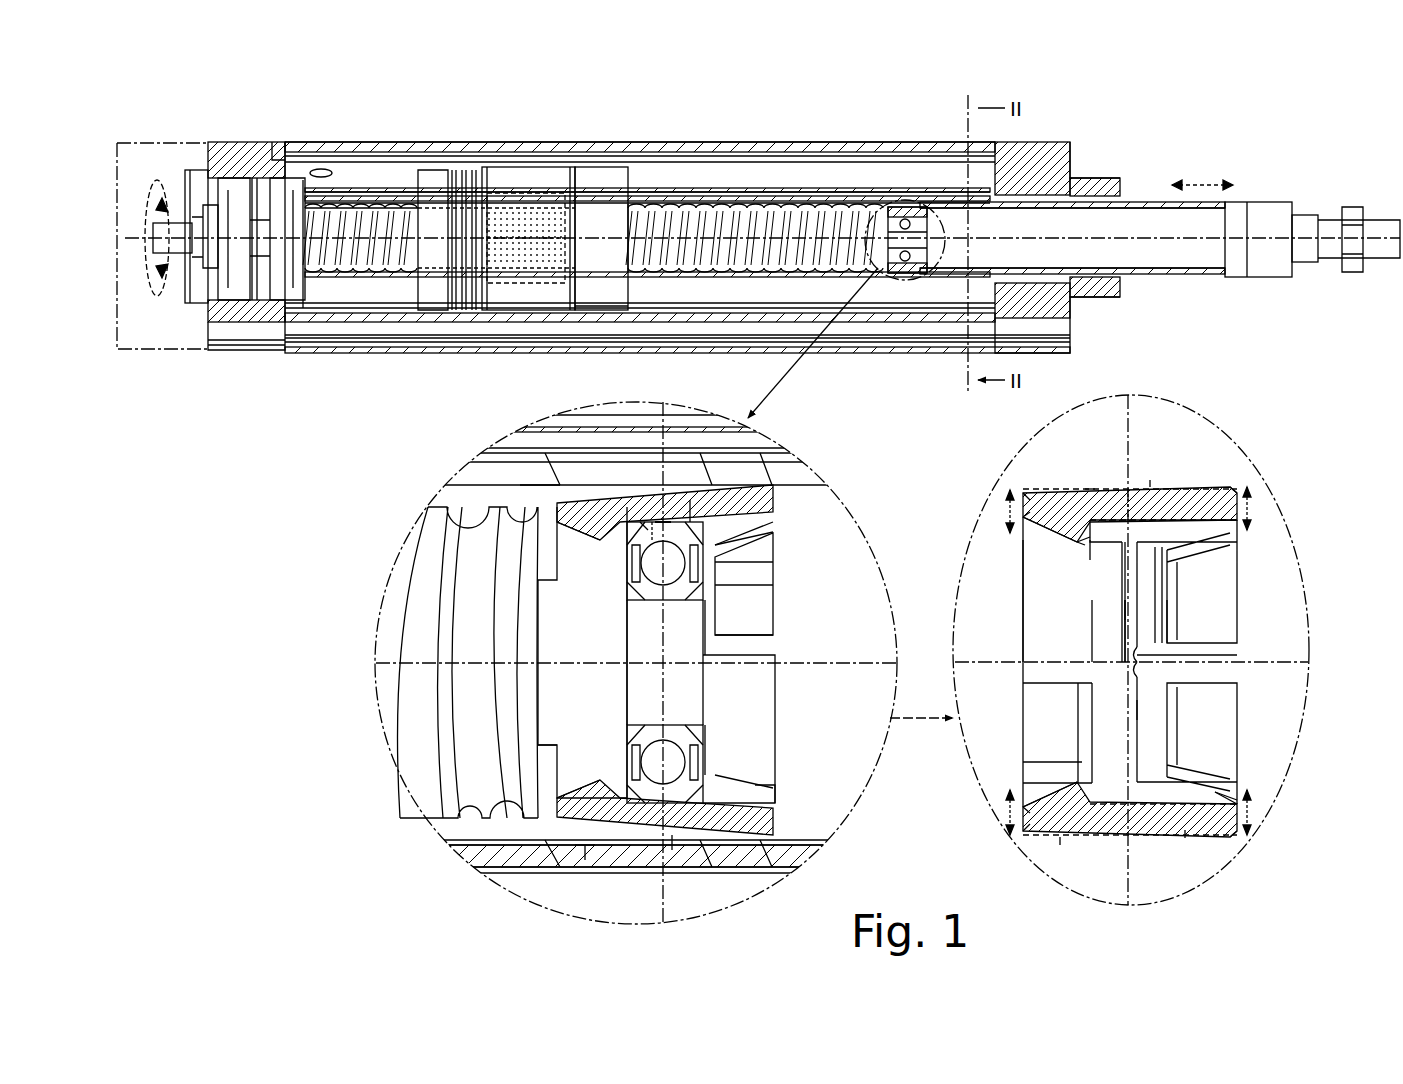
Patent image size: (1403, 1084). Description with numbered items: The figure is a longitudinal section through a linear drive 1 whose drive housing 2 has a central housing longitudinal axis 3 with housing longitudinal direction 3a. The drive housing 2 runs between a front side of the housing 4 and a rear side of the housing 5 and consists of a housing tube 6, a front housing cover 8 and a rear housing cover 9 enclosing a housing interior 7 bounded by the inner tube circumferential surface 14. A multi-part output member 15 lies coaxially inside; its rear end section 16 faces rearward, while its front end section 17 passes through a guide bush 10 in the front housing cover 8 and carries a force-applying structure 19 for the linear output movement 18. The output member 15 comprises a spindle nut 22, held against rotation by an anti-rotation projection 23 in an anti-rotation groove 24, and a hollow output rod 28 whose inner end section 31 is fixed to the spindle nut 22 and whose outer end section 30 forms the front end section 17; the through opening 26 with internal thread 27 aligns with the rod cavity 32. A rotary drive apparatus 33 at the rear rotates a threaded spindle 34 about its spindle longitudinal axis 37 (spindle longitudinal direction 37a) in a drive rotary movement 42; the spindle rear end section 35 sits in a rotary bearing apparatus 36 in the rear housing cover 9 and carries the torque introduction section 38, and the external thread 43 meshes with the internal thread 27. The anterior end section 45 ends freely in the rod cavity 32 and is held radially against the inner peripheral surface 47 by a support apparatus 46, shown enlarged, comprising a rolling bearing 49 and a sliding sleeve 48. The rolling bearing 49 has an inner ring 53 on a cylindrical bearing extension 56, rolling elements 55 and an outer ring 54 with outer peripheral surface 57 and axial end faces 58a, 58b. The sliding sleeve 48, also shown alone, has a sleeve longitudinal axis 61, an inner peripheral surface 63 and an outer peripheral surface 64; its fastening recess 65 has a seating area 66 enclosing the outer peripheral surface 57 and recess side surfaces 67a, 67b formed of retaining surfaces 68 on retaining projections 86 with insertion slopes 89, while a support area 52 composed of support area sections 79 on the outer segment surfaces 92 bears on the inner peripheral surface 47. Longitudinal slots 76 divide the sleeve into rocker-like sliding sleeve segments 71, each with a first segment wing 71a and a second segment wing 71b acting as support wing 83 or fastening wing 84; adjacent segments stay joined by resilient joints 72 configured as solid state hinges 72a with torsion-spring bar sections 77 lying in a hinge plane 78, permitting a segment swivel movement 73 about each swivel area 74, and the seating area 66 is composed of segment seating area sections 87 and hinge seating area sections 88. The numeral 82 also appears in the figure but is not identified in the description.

The linear drive 1 is at (440, 115).
The drive housing 2 is at (800, 148).
The housing longitudinal axis 3 is at (1120, 236).
The housing longitudinal direction 3a is at (1072, 203).
The front side of the housing 4 is at (1082, 165).
The rear side of the housing 5 is at (193, 150).
The housing tube 6 is at (738, 148).
The housing interior 7 is at (668, 182).
The front housing cover 8 is at (1050, 150).
The rear housing cover 9 is at (249, 143).
The guide bush 10 is at (1085, 298).
The inner tube circumferential surface 14 is at (345, 167).
The output member 15 is at (598, 170).
The rear end section 16 is at (436, 310).
The front end section 17 is at (1308, 215).
The linear output movement 18 is at (1205, 184).
The force-applying structure 19 is at (1370, 228).
The spindle nut 22 is at (498, 193).
The anti-rotation projection 23 is at (543, 193).
The anti-rotation groove 24 is at (690, 188).
The through opening 26 is at (618, 304).
The internal thread 27 is at (522, 258).
The hollow output rod 28 is at (845, 205).
The outer end section 30 is at (1235, 278).
The inner end section 31 is at (632, 206).
The rod cavity 32 is at (780, 200).
The rotary drive apparatus 33 is at (165, 148).
The threaded spindle 34 is at (335, 270).
The rear end section 35 is at (274, 158).
The rotary bearing apparatus 36 is at (262, 302).
The spindle longitudinal axis 37 is at (382, 300).
The spindle longitudinal direction 37a is at (990, 662).
The torque introduction section 38 is at (178, 258).
The drive rotary movement 42 is at (147, 208).
The external thread 43 is at (396, 205).
The anterior end section 45 is at (900, 205).
The support apparatus 46 is at (906, 276).
The inner peripheral surface 47 is at (530, 484).
The sliding sleeve 48 is at (760, 470).
The rolling bearing 49 is at (622, 590).
The support area 52 is at (585, 846).
The inner ring 53 is at (722, 588).
The outer ring 54 is at (717, 550).
The rolling elements 55 is at (717, 565).
The bearing extension 56 is at (712, 700).
The outer peripheral surface 57 is at (672, 846).
The axial end face 58a is at (570, 782).
The axial end face 58b is at (762, 792).
The sleeve longitudinal axis 61 is at (1237, 656).
The inner peripheral surface 63 is at (1082, 548).
The outer peripheral surface 64 is at (1090, 485).
The fastening recess 65 is at (663, 520).
The seating area 66 is at (706, 770).
The recess side surface 67a is at (640, 520).
The recess side surface 67b is at (700, 846).
The retaining surfaces 68 is at (1153, 682).
The sliding sleeve segments 71 is at (560, 852).
The first segment wing 71a is at (1227, 487).
The second segment wing 71b is at (1022, 493).
The resilient joint 72 is at (1080, 660).
The solid state hinge 72a is at (1134, 681).
The segment swivel movement 73 is at (1006, 508).
The swivel area 74 is at (655, 520).
The longitudinal slots 76 is at (762, 648).
The bar section 77 is at (1169, 681).
The hinge plane 78 is at (648, 636).
The support area sections 79 is at (885, 642).
The clearance 82 is at (776, 500).
The support wing 83 is at (1162, 649).
The fastening wing 84 is at (1138, 659).
The retaining projection 86 is at (640, 530).
The segment seating area sections 87 is at (1122, 608).
The hinge seating area sections 88 is at (1167, 625).
The insertion slope 89 is at (1036, 540).
The outer segment surface 92 is at (690, 505).